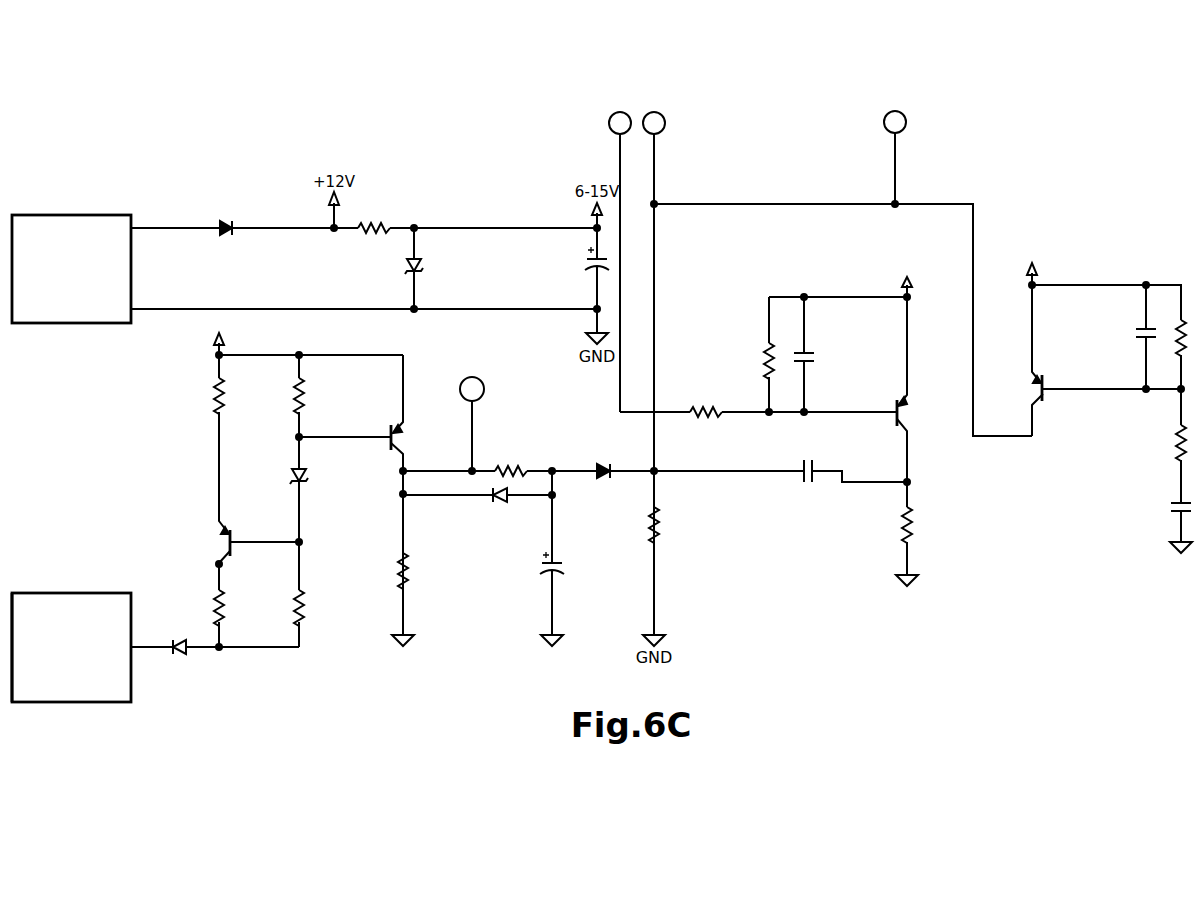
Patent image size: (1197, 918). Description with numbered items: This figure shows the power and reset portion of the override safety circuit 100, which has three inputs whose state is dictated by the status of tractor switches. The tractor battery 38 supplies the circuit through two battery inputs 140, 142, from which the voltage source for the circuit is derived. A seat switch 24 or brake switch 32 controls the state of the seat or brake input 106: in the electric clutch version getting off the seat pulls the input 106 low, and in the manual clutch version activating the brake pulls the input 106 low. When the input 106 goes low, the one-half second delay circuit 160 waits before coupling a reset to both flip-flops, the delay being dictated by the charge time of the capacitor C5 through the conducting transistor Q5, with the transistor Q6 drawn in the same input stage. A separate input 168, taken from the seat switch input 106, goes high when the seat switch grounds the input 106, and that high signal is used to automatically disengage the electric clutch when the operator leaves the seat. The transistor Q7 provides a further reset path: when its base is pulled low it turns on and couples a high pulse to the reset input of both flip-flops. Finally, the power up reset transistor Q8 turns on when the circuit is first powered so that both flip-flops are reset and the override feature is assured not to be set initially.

The battery 38 is at (67, 232).
The battery input 140 is at (171, 228).
The battery input 142 is at (152, 311).
The seat switch 24 is at (52, 692).
The brake switch 32 is at (107, 693).
The seat or brake input 106 is at (152, 649).
The clutch deactivation input 168 is at (481, 378).
The one-half second delay circuit 160 is at (497, 606).
The override safety circuit 100 is at (968, 66).
The transistor Q5 is at (392, 447).
The transistor Q6 is at (296, 480).
The transistor Q7 is at (778, 432).
The power up reset transistor Q8 is at (1048, 397).
The capacitor C5 is at (574, 560).